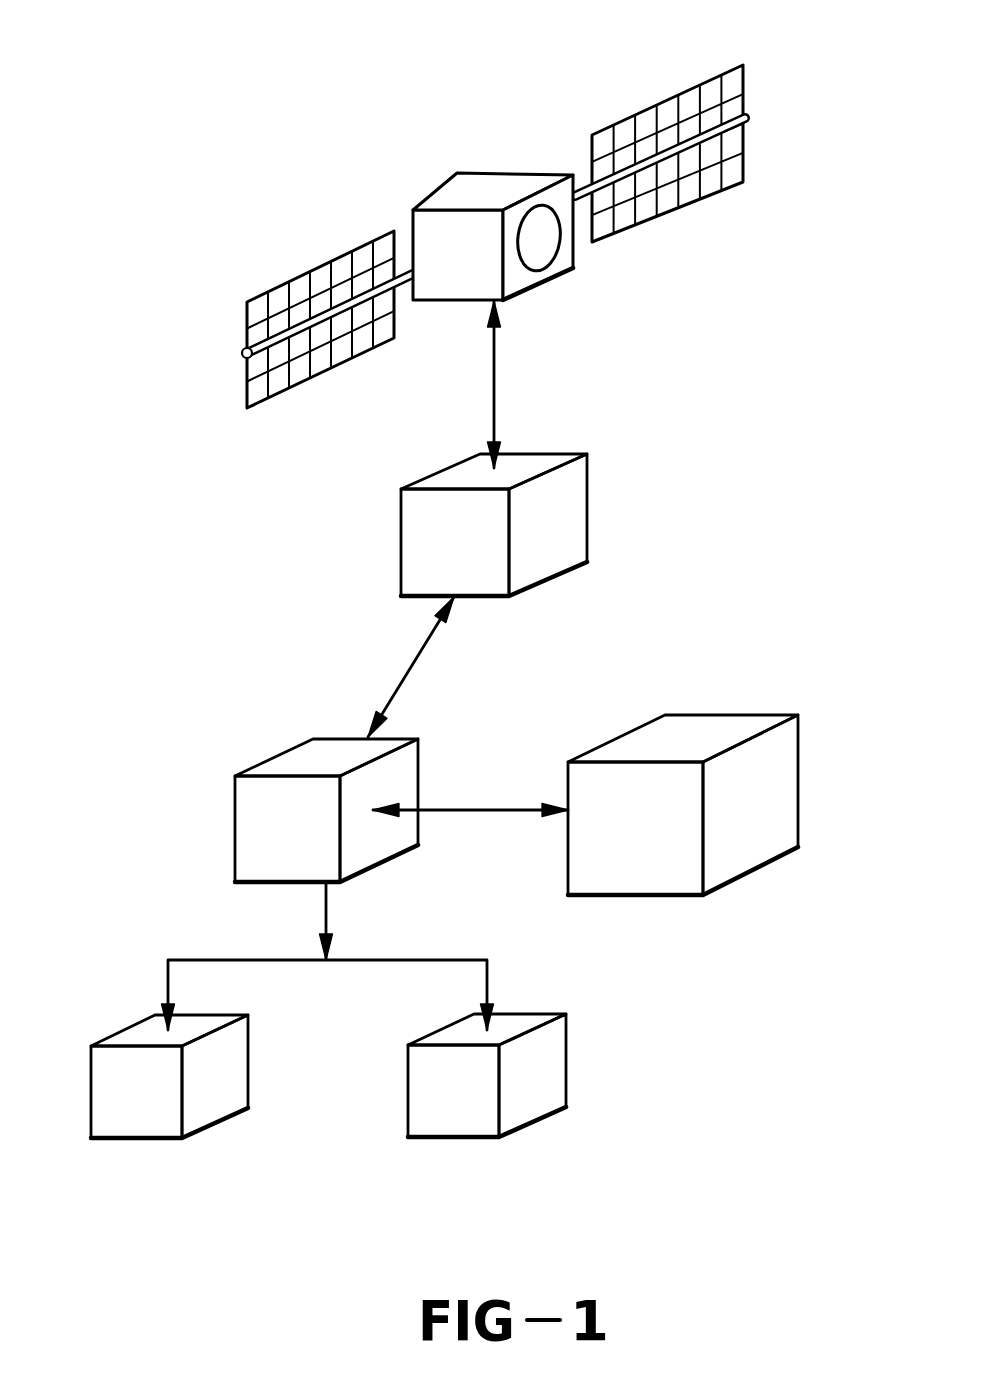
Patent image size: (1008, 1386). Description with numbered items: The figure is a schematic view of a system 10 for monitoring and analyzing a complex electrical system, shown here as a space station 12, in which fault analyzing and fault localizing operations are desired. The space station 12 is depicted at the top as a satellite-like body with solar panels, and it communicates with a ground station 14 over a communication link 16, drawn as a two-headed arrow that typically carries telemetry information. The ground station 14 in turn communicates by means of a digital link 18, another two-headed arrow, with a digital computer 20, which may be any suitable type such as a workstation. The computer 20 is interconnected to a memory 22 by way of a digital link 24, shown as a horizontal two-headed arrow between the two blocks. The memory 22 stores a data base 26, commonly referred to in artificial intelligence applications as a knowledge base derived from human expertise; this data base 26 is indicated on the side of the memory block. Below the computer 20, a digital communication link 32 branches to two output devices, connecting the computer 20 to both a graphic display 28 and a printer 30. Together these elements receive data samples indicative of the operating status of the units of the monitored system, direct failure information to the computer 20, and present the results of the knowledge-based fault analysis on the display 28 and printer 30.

The system 10 is at (833, 100).
The space station 12 is at (450, 192).
The ground station 14 is at (547, 453).
The communication link 16 is at (493, 373).
The digital link 18 is at (417, 660).
The digital computer 20 is at (275, 756).
The memory 22 is at (725, 715).
The digital link 24 is at (482, 810).
The data base 26 is at (775, 785).
The graphic display 28 is at (133, 1027).
The printer 30 is at (542, 1012).
The digital communication link 32 is at (413, 958).